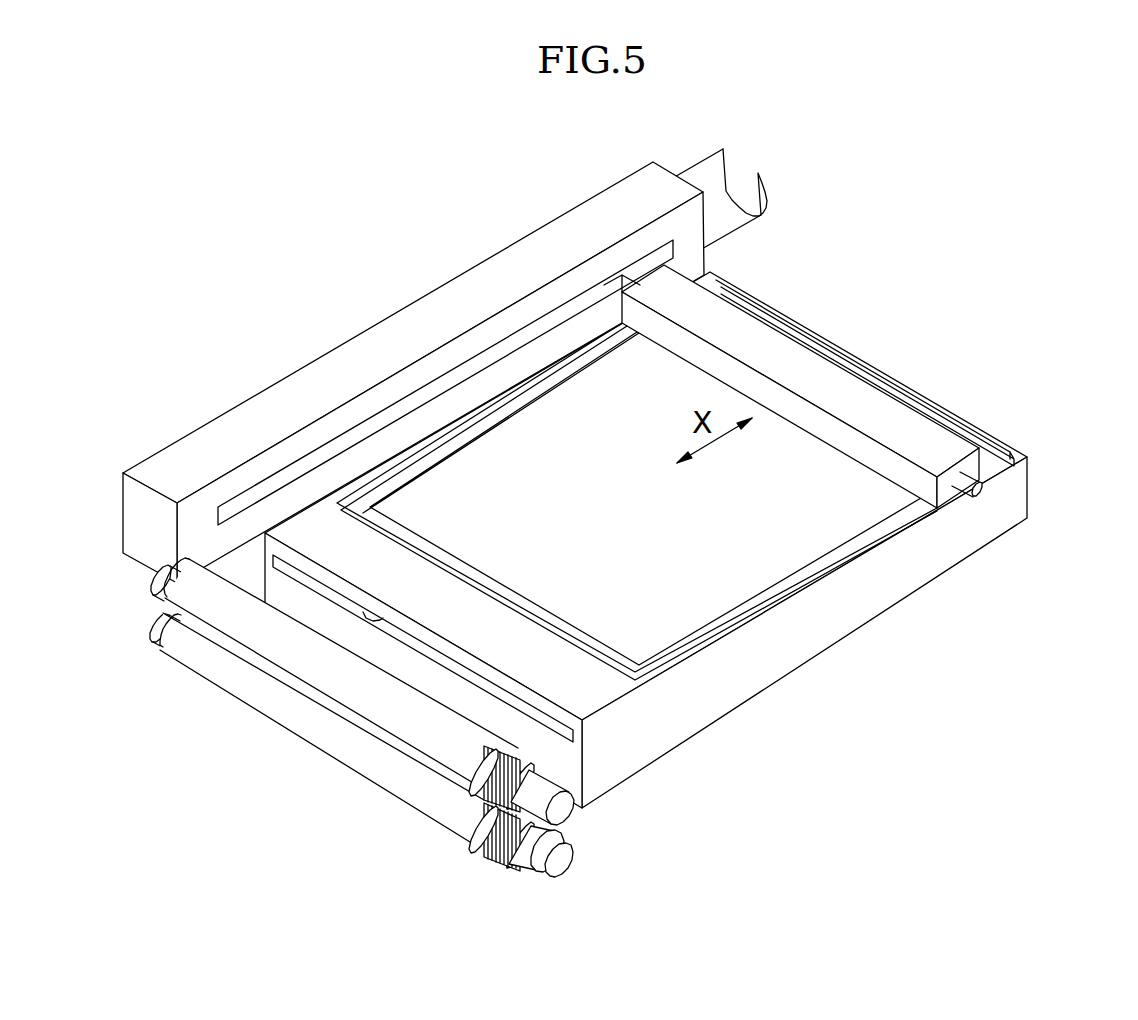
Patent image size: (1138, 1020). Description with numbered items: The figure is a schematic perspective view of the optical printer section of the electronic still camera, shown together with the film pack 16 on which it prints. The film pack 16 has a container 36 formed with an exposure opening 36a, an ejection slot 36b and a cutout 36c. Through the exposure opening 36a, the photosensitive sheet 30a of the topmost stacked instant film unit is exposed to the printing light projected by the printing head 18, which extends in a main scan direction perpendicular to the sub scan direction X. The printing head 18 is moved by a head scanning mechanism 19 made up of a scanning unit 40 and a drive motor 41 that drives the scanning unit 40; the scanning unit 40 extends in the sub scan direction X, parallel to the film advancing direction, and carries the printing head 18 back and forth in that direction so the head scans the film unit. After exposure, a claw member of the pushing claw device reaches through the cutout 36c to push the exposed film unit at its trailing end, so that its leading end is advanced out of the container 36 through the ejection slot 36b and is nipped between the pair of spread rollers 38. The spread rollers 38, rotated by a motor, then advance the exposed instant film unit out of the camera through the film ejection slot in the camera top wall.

The film pack 16 is at (810, 683).
The printing head 18 is at (815, 362).
The head scanning mechanism 19 is at (445, 354).
The photosensitive sheet 30a is at (717, 566).
The container 36 is at (693, 544).
The exposure opening 36a is at (497, 585).
The ejection slot 36b is at (382, 620).
The cutout 36c is at (998, 452).
The spread rollers 38 is at (345, 692).
The scanning unit 40 is at (484, 145).
The drive motor 41 is at (706, 165).